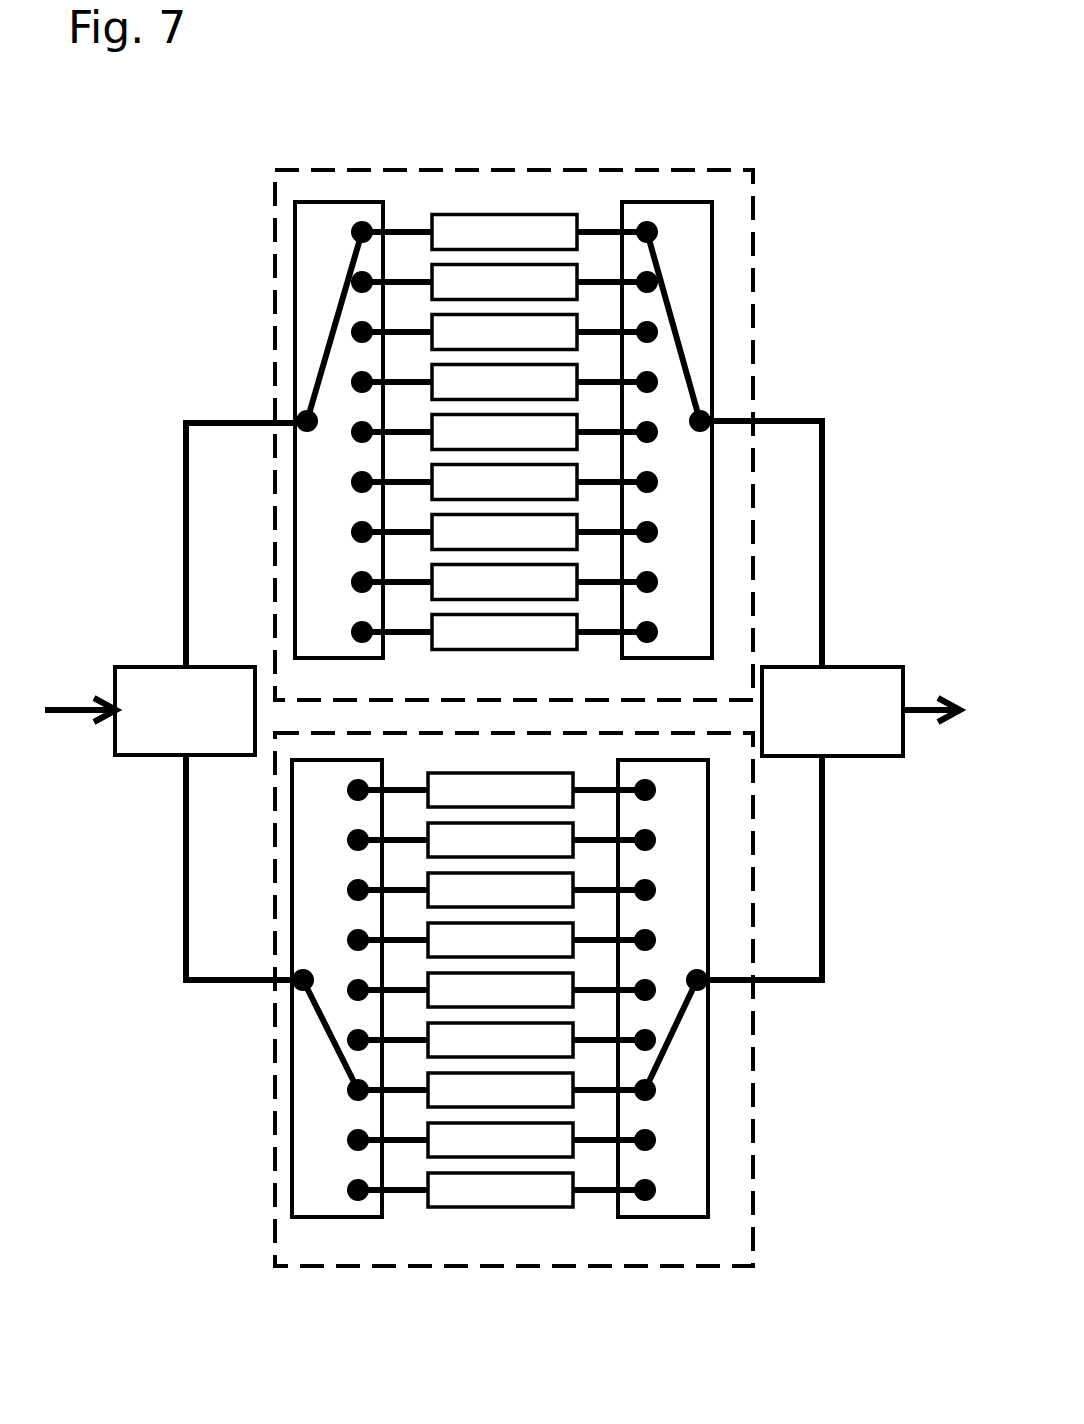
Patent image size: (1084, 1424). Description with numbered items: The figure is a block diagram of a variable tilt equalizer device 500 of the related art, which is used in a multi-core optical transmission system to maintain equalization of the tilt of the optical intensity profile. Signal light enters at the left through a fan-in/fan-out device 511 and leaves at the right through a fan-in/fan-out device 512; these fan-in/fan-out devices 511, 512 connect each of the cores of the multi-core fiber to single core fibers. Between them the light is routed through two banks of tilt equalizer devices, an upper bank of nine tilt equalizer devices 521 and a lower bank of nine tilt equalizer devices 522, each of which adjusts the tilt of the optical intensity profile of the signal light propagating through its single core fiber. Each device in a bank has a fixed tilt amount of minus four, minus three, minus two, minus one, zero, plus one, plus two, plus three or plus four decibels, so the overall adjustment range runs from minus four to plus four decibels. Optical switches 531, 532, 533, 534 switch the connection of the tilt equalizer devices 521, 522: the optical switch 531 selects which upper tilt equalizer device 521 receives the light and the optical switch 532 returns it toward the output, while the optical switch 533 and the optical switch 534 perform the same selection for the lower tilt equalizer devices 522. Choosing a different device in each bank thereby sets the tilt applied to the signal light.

The variable tilt equalizer device 500 is at (578, 120).
The fan-in/fan-out device 511 is at (128, 666).
The fan-in/fan-out device 512 is at (876, 666).
The tilt equalizer devices 521 is at (479, 210).
The tilt equalizer devices 522 is at (507, 1208).
The optical switch 531 is at (323, 202).
The optical switch 532 is at (679, 202).
The optical switch 533 is at (340, 1217).
The optical switch 534 is at (675, 1217).